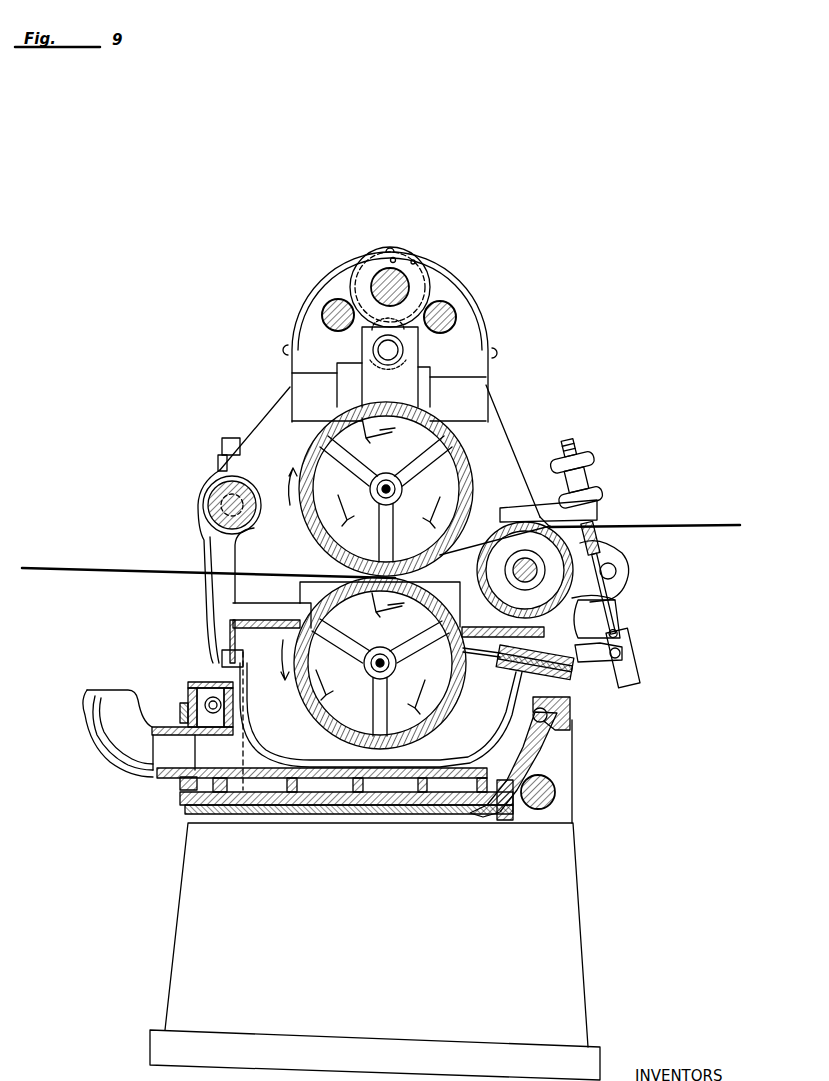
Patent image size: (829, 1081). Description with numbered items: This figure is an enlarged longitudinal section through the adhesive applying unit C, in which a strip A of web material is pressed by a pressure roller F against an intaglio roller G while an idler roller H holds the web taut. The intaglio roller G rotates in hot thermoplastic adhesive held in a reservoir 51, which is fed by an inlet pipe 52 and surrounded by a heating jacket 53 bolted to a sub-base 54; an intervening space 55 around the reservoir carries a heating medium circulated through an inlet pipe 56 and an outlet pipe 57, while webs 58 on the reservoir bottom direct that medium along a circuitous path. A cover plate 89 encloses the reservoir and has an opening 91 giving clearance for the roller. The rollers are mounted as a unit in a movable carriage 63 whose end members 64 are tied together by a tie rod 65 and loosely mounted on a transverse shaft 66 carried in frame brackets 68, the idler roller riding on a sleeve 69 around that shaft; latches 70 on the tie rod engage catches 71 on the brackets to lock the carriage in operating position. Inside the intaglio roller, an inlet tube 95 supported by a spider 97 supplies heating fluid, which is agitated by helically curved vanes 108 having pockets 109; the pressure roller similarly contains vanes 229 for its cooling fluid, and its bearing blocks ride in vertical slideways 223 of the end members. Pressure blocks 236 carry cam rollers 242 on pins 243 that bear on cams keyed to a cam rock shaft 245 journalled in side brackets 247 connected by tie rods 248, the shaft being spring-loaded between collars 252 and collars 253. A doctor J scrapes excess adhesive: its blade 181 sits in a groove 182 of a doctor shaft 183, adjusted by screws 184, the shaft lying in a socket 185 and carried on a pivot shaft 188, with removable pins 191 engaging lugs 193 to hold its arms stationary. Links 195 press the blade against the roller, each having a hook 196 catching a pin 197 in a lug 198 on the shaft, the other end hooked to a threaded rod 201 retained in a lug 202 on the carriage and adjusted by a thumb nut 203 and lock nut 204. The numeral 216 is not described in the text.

The side bracket 247 is at (448, 283).
The collar 252 is at (424, 250).
The collar 253 is at (375, 263).
The cam rock shaft 245 is at (408, 279).
The tie rod 248 is at (322, 312).
The pressure block 236 is at (383, 362).
The cam roller 242 is at (404, 342).
The pin 243 is at (398, 350).
The vertical slideway 223 is at (352, 395).
The end member 64 is at (282, 412).
The movable carriage 63 is at (258, 412).
The tie rod 65 is at (210, 493).
The latch 70 is at (218, 593).
The pressure roller F is at (465, 470).
The roller hub 216 is at (396, 494).
The helically curved vane 229 is at (385, 473).
The strip A is at (128, 568).
The cover plate 89 is at (256, 622).
The opening 91 is at (307, 610).
The catch 71 is at (238, 651).
The outlet pipe 57 is at (200, 698).
The inlet pipe 52 is at (140, 740).
The intaglio roller G is at (322, 726).
The inlet tube 95 is at (381, 656).
The spider 97 is at (373, 707).
The helically curved vane 108 is at (370, 653).
The pocket 109 is at (432, 696).
The reservoir 51 is at (500, 752).
The web 58 is at (462, 805).
The transverse shaft 66 is at (526, 558).
The sleeve 69 is at (536, 582).
The idler roller H is at (668, 610).
The lug 193 is at (607, 560).
The removable pin 191 is at (617, 571).
The link 195 is at (598, 585).
The socket 185 is at (598, 616).
The threaded rod 201 is at (593, 438).
The lock nut 204 is at (595, 459).
The thumb nut 203 is at (602, 481).
The lug 202 is at (629, 563).
The hook 196 is at (634, 666).
The pin 197 is at (622, 653).
The blade 181 is at (530, 676).
The groove 182 is at (527, 688).
The doctor shaft 183 is at (575, 700).
The screw 184 is at (578, 690).
The lug 198 is at (590, 665).
The doctor J is at (582, 712).
The heating jacket 53 is at (540, 757).
The inlet pipe 56 is at (547, 748).
The intervening space 55 is at (530, 765).
The pivot shaft 188 is at (556, 800).
The frame bracket 68 is at (565, 826).
The adhesive applying unit C is at (176, 876).
The sub-base 54 is at (178, 998).